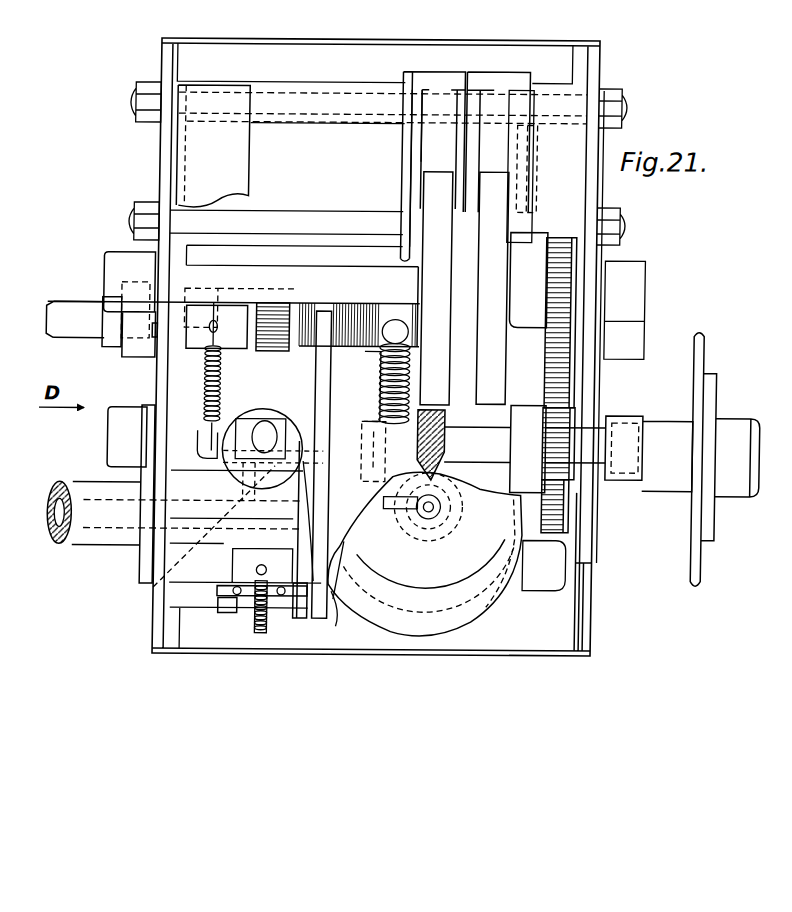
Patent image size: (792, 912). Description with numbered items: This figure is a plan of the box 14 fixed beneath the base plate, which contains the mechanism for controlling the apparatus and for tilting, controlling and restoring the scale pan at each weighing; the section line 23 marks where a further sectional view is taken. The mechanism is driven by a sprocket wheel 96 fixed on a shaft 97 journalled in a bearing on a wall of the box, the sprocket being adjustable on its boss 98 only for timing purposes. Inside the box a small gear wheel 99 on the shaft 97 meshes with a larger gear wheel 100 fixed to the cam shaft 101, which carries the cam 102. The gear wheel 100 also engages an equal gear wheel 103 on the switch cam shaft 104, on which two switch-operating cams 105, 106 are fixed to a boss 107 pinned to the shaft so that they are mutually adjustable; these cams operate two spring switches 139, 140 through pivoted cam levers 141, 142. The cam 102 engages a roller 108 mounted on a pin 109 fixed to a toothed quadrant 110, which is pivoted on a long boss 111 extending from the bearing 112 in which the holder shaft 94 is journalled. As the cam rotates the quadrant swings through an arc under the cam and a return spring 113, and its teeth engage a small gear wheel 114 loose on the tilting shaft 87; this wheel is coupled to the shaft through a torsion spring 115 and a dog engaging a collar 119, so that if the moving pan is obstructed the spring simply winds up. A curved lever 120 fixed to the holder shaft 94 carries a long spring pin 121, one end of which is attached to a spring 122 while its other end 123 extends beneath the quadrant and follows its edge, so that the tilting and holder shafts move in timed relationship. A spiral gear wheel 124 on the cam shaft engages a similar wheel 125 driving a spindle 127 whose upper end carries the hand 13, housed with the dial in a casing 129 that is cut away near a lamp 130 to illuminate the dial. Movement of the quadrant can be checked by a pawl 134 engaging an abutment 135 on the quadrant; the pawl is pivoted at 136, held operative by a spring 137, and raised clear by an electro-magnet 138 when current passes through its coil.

The hand 13 is at (380, 536).
The box 14 is at (160, 128).
The section line 23 is at (392, 72).
The tilting shaft 87 is at (66, 308).
The holder shaft 94 is at (60, 526).
The sprocket wheel 96 is at (698, 345).
The shaft 97 is at (757, 442).
The boss 98 is at (708, 513).
The small gear wheel 99 is at (581, 500).
The larger gear wheel 100 is at (571, 385).
The cam shaft 101 is at (481, 432).
The cam 102 is at (383, 366).
The gear wheel 103 is at (574, 263).
The switch cam shaft 104 is at (358, 284).
The switch-operating cam 105 is at (428, 187).
The switch-operating cam 106 is at (500, 172).
The boss 107 is at (474, 349).
The roller 108 is at (331, 550).
The pin 109 is at (428, 575).
The toothed quadrant 110 is at (272, 372).
The long boss 111 is at (295, 630).
The bearing 112 is at (102, 490).
The return spring 113 is at (162, 366).
The small gear wheel 114 is at (278, 300).
The torsion spring 115 is at (306, 302).
The collar 119 is at (203, 300).
The curved lever 120 is at (362, 540).
The spring pin 121 is at (373, 405).
The spring 122 is at (380, 352).
The end of spring pin 123 is at (303, 464).
The spiral gear wheel 124 is at (402, 459).
The spiral gear wheel 125 is at (428, 521).
The spindle 127 is at (460, 508).
The casing 129 is at (482, 618).
The lamp 130 is at (599, 565).
The pawl 134 is at (160, 588).
The abutment 135 is at (273, 447).
The pivot 136 is at (231, 615).
The spring 137 is at (261, 614).
The electro-magnet 138 is at (192, 441).
The spring switch 139 is at (416, 143).
The spring switch 140 is at (537, 151).
The cam lever 141 is at (448, 82).
The cam lever 142 is at (502, 86).